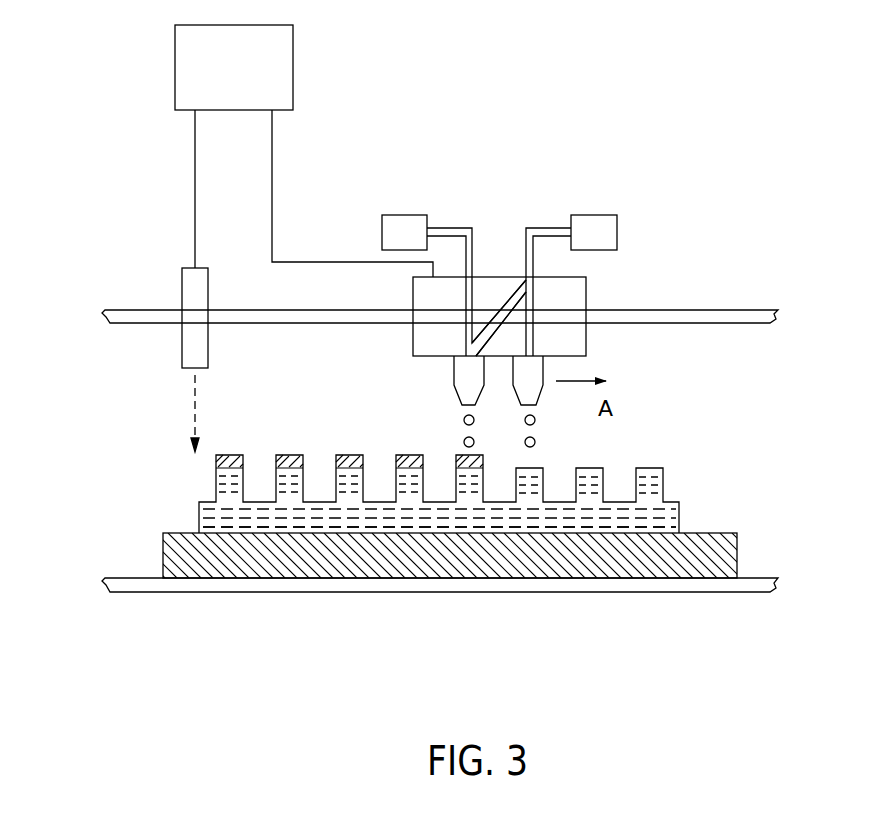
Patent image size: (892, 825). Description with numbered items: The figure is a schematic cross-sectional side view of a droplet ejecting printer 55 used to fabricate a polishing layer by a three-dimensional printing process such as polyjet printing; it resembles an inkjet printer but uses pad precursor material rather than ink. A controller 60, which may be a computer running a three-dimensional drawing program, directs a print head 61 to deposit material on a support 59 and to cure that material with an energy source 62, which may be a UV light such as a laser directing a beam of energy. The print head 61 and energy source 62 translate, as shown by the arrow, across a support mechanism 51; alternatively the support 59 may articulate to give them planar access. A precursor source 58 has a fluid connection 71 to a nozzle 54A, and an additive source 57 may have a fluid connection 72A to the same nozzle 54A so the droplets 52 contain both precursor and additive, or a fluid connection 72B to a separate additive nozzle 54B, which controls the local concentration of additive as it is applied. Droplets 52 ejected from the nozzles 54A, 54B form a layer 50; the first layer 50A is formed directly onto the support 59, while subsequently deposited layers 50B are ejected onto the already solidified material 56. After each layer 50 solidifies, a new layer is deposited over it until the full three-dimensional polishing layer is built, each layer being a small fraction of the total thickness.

The layer 50 is at (439, 494).
The first layer 50A is at (199, 525).
The subsequently deposited layer 50B is at (199, 510).
The support mechanism 51 is at (698, 323).
The droplets 52 is at (462, 418).
The nozzle 54A is at (454, 372).
The additive nozzle 54B is at (543, 367).
The droplet ejecting printer 55 is at (150, 152).
The solidified material 56 is at (662, 478).
The additive source 57 is at (594, 232).
The precursor source 58 is at (404, 232).
The support 59 is at (698, 592).
The controller 60 is at (234, 67).
The print head 61 is at (575, 277).
The energy source 62 is at (182, 283).
The fluid connection 71 is at (472, 237).
The fluid connection 72A is at (498, 308).
The fluid connection 72B is at (533, 293).